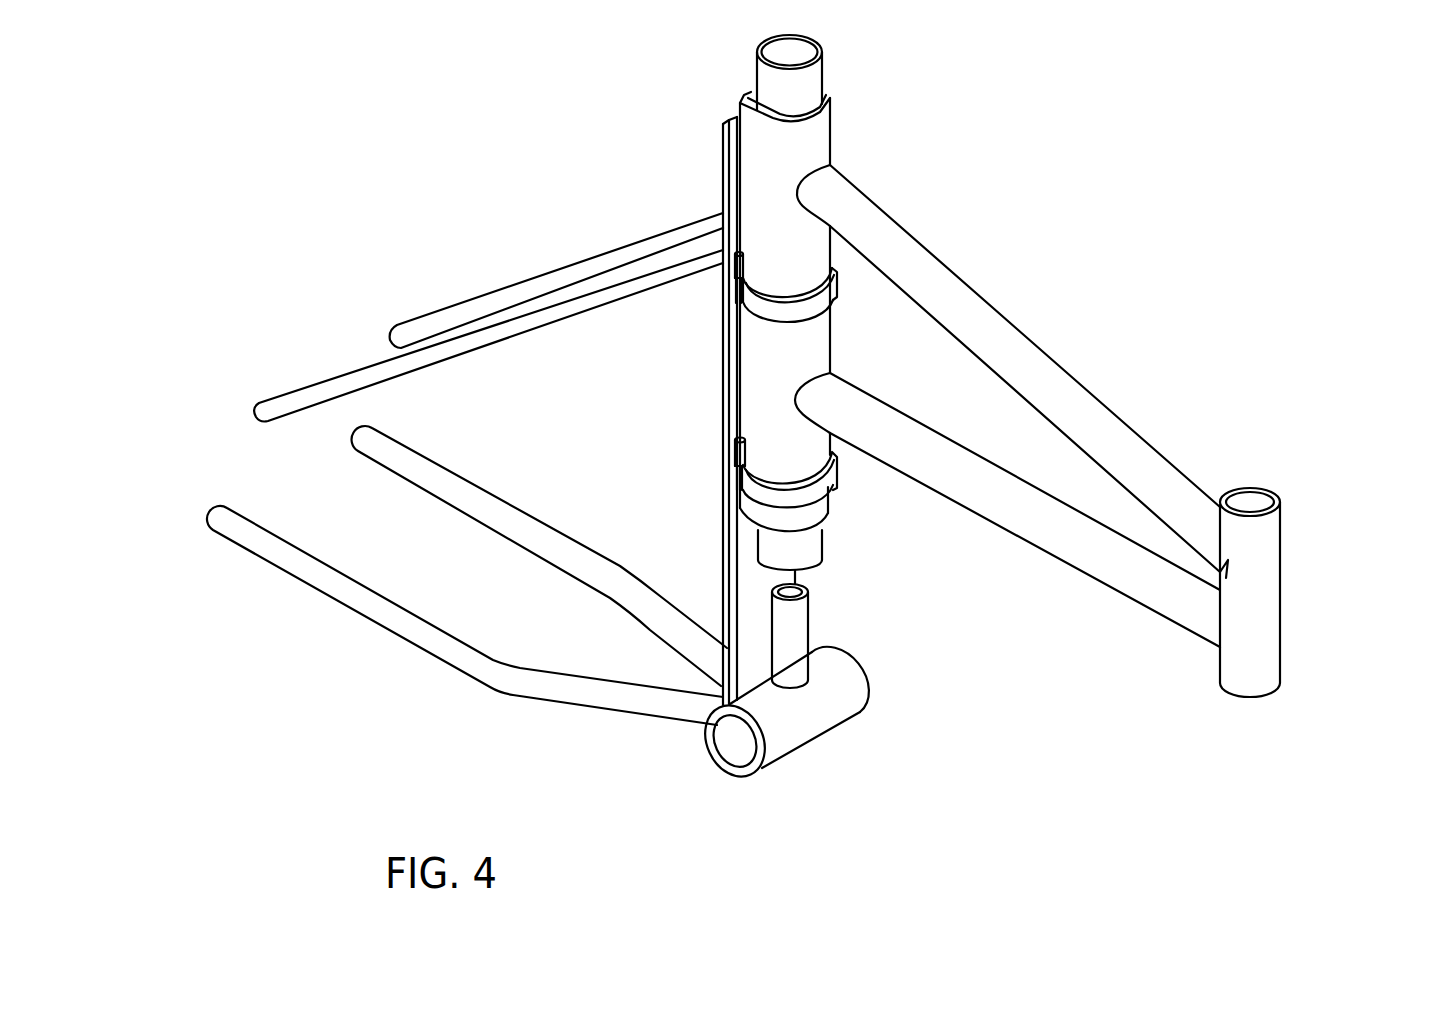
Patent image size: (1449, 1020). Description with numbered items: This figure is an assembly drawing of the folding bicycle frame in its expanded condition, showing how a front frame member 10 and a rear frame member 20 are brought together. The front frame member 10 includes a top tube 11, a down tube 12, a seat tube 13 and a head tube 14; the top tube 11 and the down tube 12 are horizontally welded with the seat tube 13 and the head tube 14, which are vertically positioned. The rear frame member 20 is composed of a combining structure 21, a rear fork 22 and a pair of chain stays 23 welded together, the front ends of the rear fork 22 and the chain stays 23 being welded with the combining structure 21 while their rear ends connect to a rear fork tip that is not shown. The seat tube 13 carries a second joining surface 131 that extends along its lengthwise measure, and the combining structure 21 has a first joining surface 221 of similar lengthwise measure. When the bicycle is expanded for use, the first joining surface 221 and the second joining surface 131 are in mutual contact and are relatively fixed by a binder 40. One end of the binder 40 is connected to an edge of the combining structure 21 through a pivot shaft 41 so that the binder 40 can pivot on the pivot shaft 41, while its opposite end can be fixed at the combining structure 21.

The front frame member 10 is at (1350, 115).
The top tube 11 is at (962, 290).
The down tube 12 is at (988, 513).
The seat tube 13 is at (820, 133).
The second joining surface 131 is at (757, 92).
The head tube 14 is at (1255, 497).
The rear frame member 20 is at (185, 112).
The combining structure 21 is at (733, 158).
The first joining surface 221 is at (745, 557).
The rear fork 22 is at (510, 310).
The chain stays 23 is at (403, 618).
The binder 40 is at (826, 300).
The pivot shaft 41 is at (735, 268).